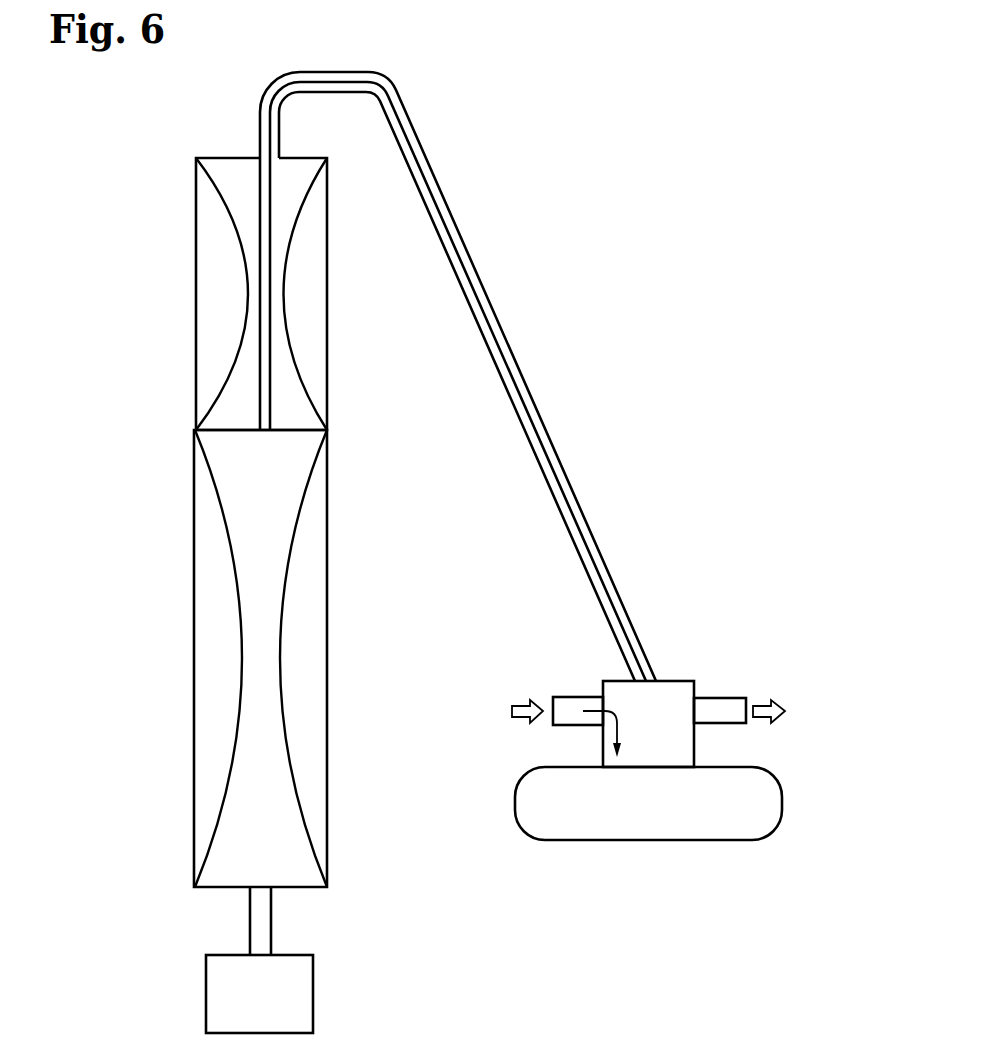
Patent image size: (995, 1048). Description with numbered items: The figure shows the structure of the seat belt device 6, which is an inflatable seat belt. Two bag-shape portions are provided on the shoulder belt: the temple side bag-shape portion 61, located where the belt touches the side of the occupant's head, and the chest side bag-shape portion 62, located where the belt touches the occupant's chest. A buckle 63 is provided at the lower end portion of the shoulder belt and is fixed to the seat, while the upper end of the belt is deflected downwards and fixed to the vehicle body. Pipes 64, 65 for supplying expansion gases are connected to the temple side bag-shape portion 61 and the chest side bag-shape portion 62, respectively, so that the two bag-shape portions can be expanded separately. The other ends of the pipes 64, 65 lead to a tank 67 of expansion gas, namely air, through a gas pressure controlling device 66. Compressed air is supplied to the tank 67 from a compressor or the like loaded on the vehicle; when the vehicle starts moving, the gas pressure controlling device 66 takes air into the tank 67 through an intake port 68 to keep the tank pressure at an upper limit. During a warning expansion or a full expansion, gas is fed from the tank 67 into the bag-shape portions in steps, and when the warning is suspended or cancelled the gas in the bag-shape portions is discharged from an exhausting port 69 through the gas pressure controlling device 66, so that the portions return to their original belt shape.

The seat belt device 6 is at (603, 198).
The temple side bag-shape portion 61 is at (190, 334).
The chest side bag-shape portion 62 is at (190, 548).
The buckle 63 is at (313, 1004).
The pipe 64 is at (477, 321).
The pipe 65 is at (507, 327).
The gas pressure controlling device 66 is at (694, 746).
The tank 67 is at (515, 798).
The intake port 68 is at (567, 697).
The exhausting port 69 is at (722, 698).